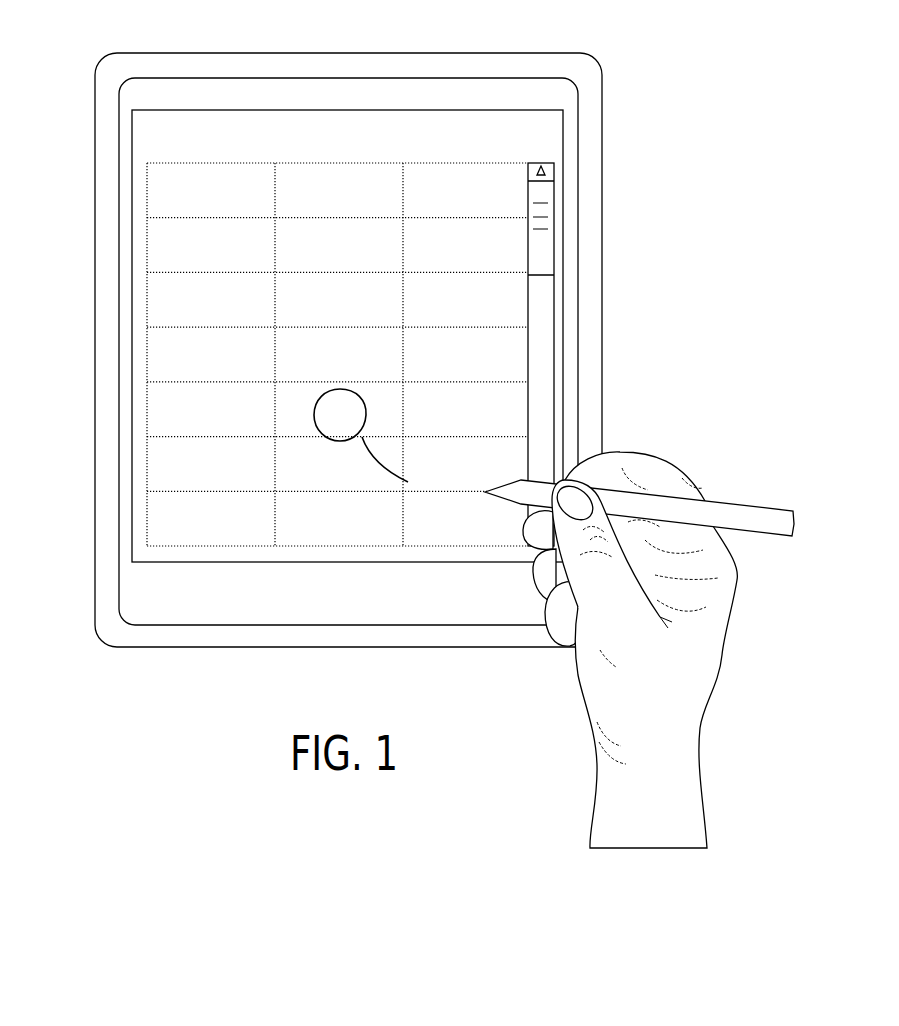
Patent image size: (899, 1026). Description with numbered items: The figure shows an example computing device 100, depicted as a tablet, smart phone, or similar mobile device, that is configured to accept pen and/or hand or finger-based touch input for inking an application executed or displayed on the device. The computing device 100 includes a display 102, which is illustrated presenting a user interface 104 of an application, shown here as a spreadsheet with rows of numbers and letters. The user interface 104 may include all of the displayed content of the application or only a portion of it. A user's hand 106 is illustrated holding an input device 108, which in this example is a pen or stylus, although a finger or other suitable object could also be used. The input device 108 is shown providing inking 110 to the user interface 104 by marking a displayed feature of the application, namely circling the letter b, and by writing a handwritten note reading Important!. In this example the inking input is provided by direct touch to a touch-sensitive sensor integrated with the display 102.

The computing device 100 is at (112, 37).
The display 102 is at (512, 78).
The user interface 104 is at (572, 95).
The user's hand 106 is at (655, 459).
The input device 108 is at (727, 503).
The inking 110 is at (404, 536).